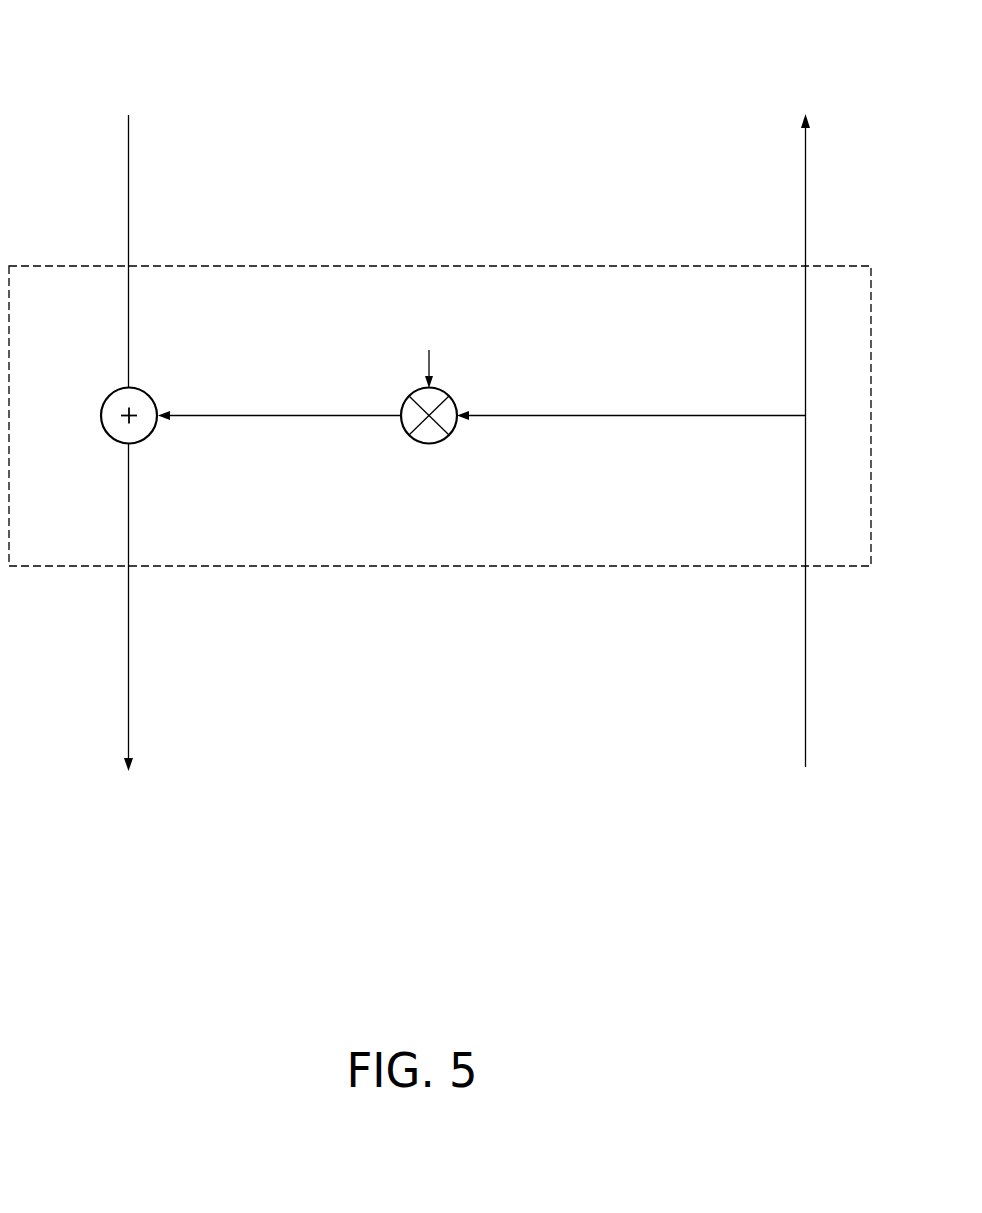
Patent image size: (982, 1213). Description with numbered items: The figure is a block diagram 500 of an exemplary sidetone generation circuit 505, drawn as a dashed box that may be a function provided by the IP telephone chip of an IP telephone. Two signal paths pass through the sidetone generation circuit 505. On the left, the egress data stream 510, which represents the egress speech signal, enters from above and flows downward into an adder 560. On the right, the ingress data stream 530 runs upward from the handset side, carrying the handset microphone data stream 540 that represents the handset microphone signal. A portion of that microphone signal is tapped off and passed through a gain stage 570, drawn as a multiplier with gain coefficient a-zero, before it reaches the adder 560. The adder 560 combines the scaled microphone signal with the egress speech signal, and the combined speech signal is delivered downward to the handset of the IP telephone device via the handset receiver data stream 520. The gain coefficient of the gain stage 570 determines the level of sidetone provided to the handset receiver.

The sidetone injection system 500 is at (452, 18).
The sidetone generation circuit 505 is at (258, 258).
The egress data stream 510 is at (128, 224).
The handset receiver data stream 520 is at (130, 644).
The ingress data stream 530 is at (805, 235).
The handset microphone data stream 540 is at (806, 630).
The adder 560 is at (93, 407).
The gain stage 570 is at (402, 388).